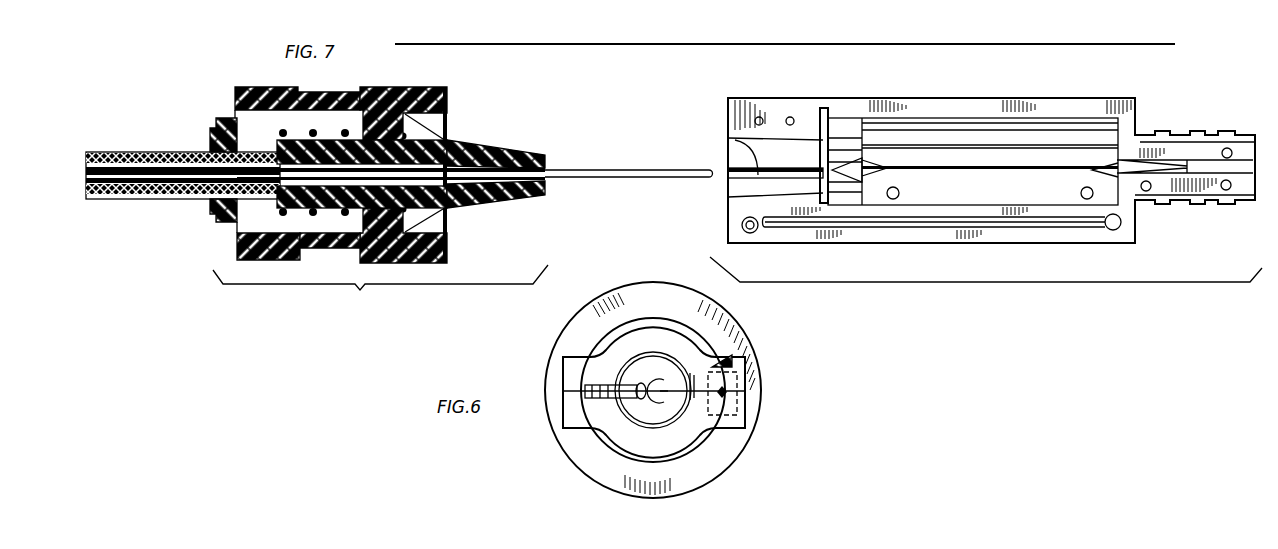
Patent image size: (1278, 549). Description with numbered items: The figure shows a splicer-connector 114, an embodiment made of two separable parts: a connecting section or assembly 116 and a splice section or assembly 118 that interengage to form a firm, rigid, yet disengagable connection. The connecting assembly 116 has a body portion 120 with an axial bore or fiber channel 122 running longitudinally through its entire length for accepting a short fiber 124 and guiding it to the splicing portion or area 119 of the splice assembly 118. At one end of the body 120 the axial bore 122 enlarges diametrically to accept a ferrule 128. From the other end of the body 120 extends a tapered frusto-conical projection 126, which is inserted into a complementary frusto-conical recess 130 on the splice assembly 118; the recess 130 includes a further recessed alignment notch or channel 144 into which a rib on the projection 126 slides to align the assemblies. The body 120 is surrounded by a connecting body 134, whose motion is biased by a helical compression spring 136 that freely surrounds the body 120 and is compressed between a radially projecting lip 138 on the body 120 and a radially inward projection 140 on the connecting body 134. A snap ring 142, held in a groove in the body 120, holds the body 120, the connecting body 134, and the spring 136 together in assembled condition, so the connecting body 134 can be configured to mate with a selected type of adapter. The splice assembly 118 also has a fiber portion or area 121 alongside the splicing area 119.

In FIG. 7, the splicer-connector 114 is at (820, 90).
In FIG. 6, the splicer-connector 114 is at (535, 352).
In FIG. 7, the connecting section or assembly 116 is at (380, 290).
In FIG. 7, the splice section or assembly 118 is at (986, 207).
In FIG. 6, the splice section or assembly 118 is at (740, 356).
In FIG. 7, the splicing portion or area 119 is at (991, 193).
In FIG. 7, the body portion 120 is at (262, 125).
In FIG. 7, the fiber portion or area 121 is at (1198, 163).
In FIG. 7, the axial bore or fiber channel 122 is at (518, 195).
In FIG. 7, the short fiber 124 is at (455, 150).
In FIG. 7, the frusto-conical projection 126 is at (503, 143).
In FIG. 7, the ferrule 128 is at (152, 152).
In FIG. 7, the frusto-conical recess 130 is at (747, 200).
In FIG. 7, the connecting body 134 is at (243, 268).
In FIG. 6, the connecting body 134 is at (653, 282).
In FIG. 7, the helical compression spring 136 is at (377, 92).
In FIG. 7, the radially projecting lip 138 is at (228, 117).
In FIG. 7, the radially inward projection 140 is at (385, 222).
In FIG. 7, the snap ring 142 is at (437, 93).
In FIG. 7, the alignment notch or channel 144 is at (735, 130).